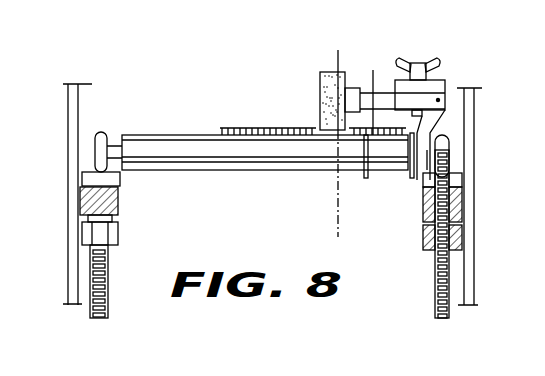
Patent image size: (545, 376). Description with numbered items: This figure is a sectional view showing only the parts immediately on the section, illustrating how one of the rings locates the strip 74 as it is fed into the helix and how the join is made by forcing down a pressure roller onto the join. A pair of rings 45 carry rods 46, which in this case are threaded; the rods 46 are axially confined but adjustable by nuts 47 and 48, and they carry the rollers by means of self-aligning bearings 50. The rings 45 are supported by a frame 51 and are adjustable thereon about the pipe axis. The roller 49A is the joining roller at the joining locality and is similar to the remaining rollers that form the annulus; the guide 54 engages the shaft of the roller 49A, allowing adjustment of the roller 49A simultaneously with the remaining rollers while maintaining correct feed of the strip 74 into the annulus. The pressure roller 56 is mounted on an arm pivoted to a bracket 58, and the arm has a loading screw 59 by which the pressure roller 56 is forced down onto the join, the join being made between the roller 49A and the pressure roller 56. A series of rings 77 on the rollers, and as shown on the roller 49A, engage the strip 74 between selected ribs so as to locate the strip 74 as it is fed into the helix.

The rings 45 is at (120, 210).
The rods 46 is at (109, 266).
The nuts 47 is at (120, 236).
The nuts 48 is at (121, 178).
The roller 49A is at (164, 143).
The self-aligning bearings 50 is at (101, 131).
The frame 51 is at (67, 123).
The guide 54 is at (416, 178).
The pressure roller 56 is at (319, 86).
The bracket 58 is at (450, 124).
The loading screw 59 is at (442, 64).
The strip 74 is at (365, 137).
The rings 77 is at (363, 168).